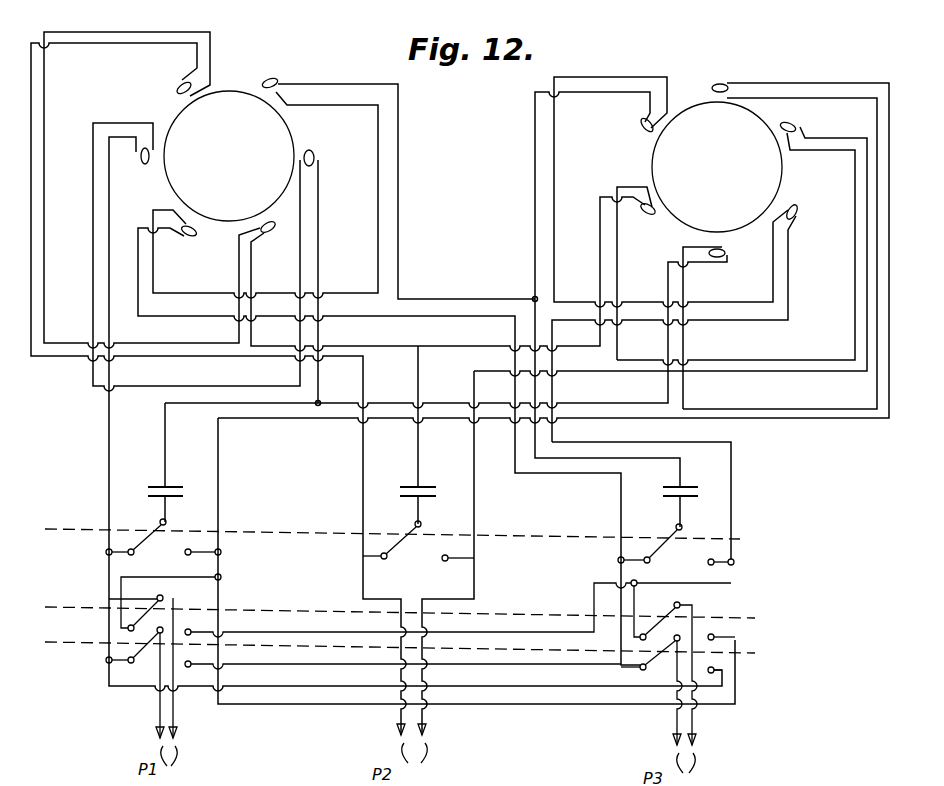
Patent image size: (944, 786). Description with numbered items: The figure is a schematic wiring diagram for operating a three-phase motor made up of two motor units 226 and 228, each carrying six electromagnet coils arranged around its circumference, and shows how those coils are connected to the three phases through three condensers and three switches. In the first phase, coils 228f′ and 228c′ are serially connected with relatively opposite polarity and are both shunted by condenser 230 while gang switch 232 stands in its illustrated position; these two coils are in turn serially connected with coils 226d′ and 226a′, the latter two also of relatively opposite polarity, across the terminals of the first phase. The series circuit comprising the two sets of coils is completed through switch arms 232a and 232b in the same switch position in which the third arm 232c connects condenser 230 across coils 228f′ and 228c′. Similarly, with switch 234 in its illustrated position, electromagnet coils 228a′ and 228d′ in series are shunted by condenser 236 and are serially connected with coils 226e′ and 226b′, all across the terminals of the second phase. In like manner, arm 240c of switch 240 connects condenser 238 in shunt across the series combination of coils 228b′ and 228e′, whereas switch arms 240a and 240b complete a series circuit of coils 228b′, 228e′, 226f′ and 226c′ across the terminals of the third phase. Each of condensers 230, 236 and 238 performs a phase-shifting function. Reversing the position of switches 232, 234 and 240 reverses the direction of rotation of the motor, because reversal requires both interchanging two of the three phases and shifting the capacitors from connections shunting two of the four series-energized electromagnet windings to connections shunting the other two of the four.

The motor 226 is at (685, 70).
The motor 228 is at (249, 60).
The coil 226a′ is at (724, 80).
The coil 226b′ is at (796, 123).
The coil 226c′ is at (797, 205).
The coil 226d′ is at (720, 260).
The coil 226e′ is at (646, 220).
The coil 226f′ is at (640, 127).
The electromagnet coil 228a′ is at (175, 87).
The coil 228b′ is at (282, 78).
The coil 228c′ is at (318, 152).
The electromagnet coil 228d′ is at (268, 238).
The coil 228e′ is at (188, 240).
The coil 228f′ is at (144, 166).
The condenser 230 is at (166, 485).
The gang switch 232 is at (190, 525).
The switch arm 232a is at (106, 660).
The switch arm 232b is at (107, 602).
The switch arm 232c is at (150, 535).
The switch 234 is at (440, 531).
The condenser 236 is at (421, 485).
The condenser 238 is at (683, 485).
The switch 240 is at (706, 531).
The switch arm 240a is at (650, 660).
The switch arm 240b is at (677, 602).
The switch arm 240c is at (672, 532).